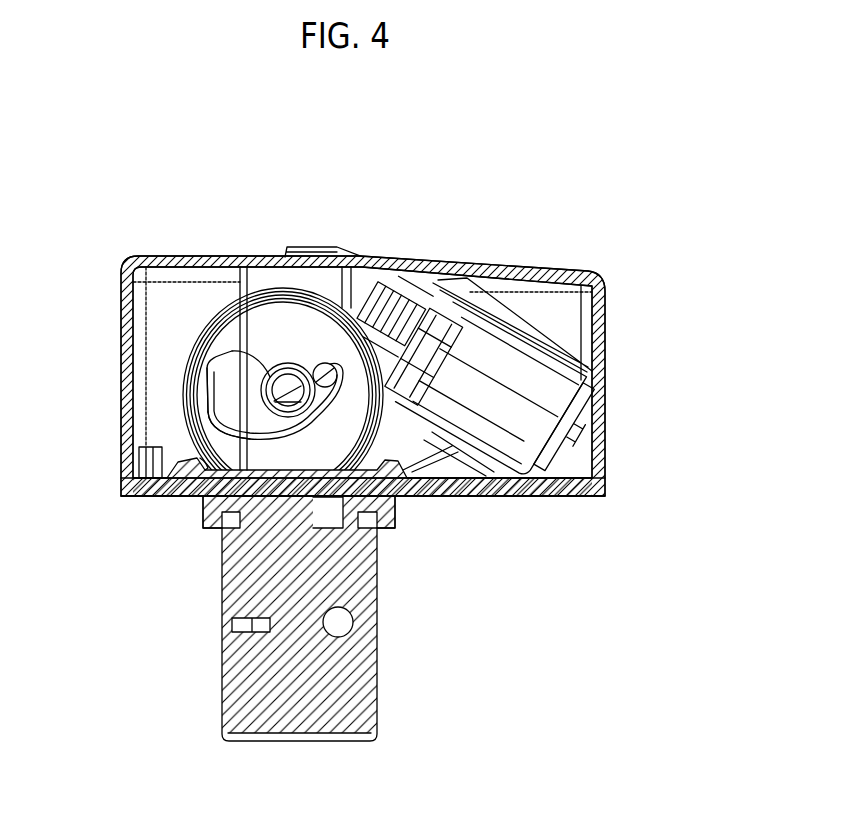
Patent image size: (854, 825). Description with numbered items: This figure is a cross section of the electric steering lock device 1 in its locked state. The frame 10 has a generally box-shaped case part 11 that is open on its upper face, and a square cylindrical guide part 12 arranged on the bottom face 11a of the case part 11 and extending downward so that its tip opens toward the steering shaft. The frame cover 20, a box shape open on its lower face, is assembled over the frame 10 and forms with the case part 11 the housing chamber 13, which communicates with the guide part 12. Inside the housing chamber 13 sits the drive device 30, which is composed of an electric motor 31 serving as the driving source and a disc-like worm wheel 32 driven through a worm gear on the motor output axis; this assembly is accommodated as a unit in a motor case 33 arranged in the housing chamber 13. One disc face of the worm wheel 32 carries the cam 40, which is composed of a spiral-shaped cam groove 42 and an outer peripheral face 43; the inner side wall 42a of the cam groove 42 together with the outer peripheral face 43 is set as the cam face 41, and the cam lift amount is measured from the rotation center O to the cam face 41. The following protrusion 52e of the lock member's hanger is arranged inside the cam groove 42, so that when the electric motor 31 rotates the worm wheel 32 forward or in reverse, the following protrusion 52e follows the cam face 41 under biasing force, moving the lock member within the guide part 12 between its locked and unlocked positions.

The electric steering lock device 1 is at (640, 208).
The frame 10 is at (326, 618).
The case part 11 is at (477, 496).
The bottom face 11a is at (187, 496).
The guide part 12 is at (353, 622).
The housing chamber 13 is at (181, 331).
The frame cover 20 is at (606, 378).
The drive device 30 is at (475, 320).
The electric motor 31 is at (468, 337).
The worm wheel 32 is at (372, 280).
The motor case 33 is at (512, 292).
The cam 40 is at (195, 410).
The cam face 41 is at (175, 403).
The cam groove 42 is at (197, 466).
The inner side wall 42a is at (210, 436).
The outer peripheral face 43 is at (218, 386).
The following protrusion 52e is at (313, 363).
The rotation center O is at (288, 390).